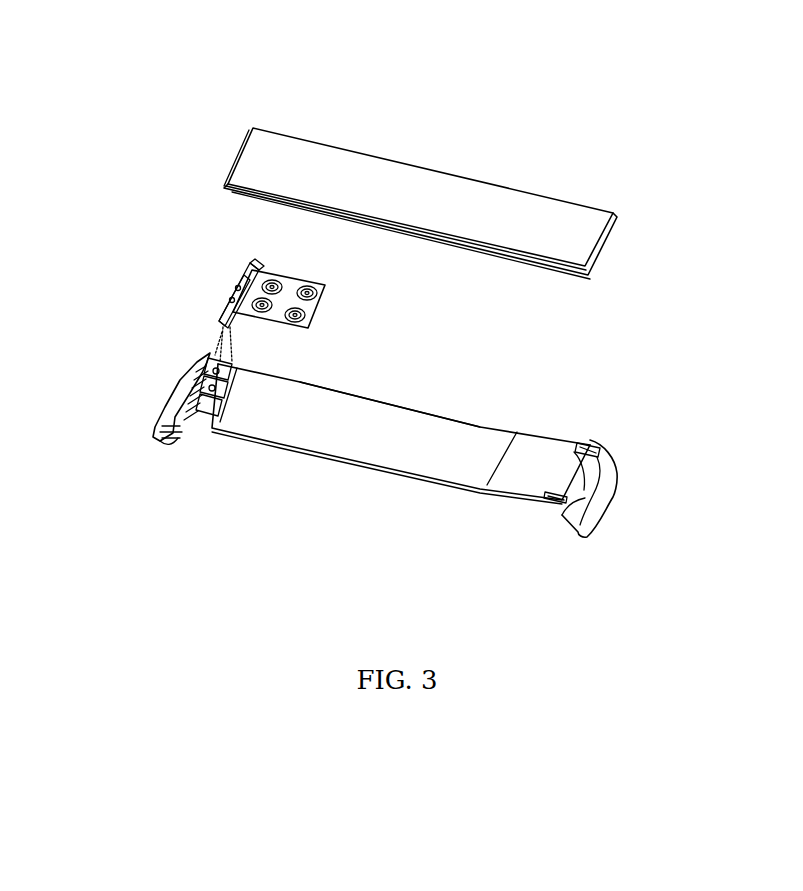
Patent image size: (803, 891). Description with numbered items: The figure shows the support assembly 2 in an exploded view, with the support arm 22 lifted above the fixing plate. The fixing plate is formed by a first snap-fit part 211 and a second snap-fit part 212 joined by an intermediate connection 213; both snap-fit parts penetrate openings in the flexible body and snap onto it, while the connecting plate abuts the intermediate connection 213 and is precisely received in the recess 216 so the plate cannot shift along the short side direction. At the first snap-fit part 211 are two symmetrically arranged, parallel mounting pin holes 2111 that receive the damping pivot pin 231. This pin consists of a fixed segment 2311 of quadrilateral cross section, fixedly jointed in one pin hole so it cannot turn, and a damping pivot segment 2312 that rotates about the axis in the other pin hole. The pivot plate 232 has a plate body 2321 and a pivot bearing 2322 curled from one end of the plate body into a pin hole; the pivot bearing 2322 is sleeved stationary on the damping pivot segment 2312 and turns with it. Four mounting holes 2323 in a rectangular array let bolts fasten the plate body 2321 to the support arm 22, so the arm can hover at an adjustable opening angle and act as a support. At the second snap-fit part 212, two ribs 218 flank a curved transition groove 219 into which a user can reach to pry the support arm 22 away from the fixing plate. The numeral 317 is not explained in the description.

The support assembly 2 is at (445, 37).
The support arm 22 is at (575, 238).
The first snap-fit part 211 is at (142, 369).
The second snap-fit part 212 is at (655, 508).
The intermediate connection 213 is at (329, 518).
The recess 216 is at (383, 420).
The ribs 218 is at (590, 440).
The curved transition groove 219 is at (617, 472).
The hatched end face 317 is at (170, 440).
The mounting pin holes 2111 is at (213, 348).
The damping pivot pin 231 is at (129, 230).
The fixed segment 2311 is at (243, 280).
The damping pivot segment 2312 is at (233, 293).
The pivot bearing 2322 is at (228, 310).
The pivot plate 232 is at (318, 299).
The plate body 2321 is at (325, 299).
The mounting holes 2323 is at (273, 278).